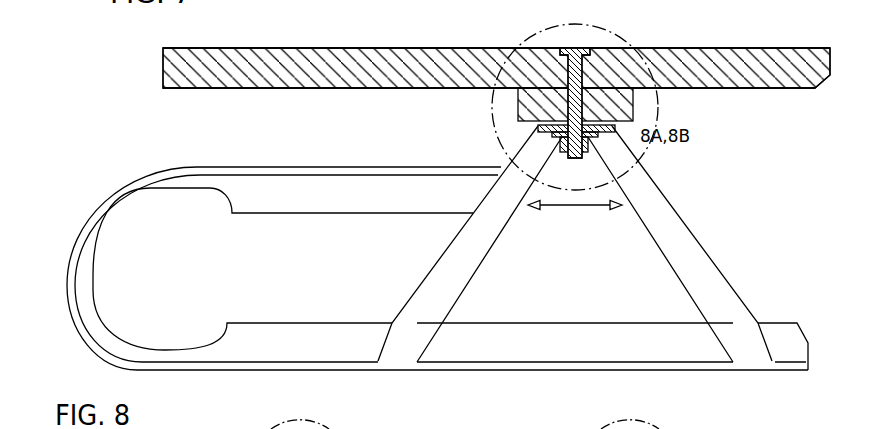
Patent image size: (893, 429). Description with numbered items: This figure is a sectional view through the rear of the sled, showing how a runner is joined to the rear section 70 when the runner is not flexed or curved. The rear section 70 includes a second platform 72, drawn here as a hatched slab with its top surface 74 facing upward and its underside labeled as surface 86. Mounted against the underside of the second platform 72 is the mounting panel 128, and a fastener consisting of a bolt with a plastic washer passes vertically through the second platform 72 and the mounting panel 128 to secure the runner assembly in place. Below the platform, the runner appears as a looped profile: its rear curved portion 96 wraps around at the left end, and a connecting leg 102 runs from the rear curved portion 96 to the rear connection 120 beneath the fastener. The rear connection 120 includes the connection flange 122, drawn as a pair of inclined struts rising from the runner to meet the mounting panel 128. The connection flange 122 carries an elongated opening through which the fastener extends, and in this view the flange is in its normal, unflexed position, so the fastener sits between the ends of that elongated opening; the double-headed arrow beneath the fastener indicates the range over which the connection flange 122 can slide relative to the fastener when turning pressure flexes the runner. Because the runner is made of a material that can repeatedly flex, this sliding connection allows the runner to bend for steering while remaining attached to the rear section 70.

The rear section 70 is at (163, 72).
The second platform 72 is at (335, 65).
The top surface 74 is at (282, 48).
The bottom surface of panel 86 is at (248, 88).
The rear curved portion 96 is at (83, 283).
The connecting leg 102 is at (337, 203).
The rear connection 120 is at (592, 260).
The connection flange 122 is at (692, 247).
The mounting panel 128 is at (633, 104).